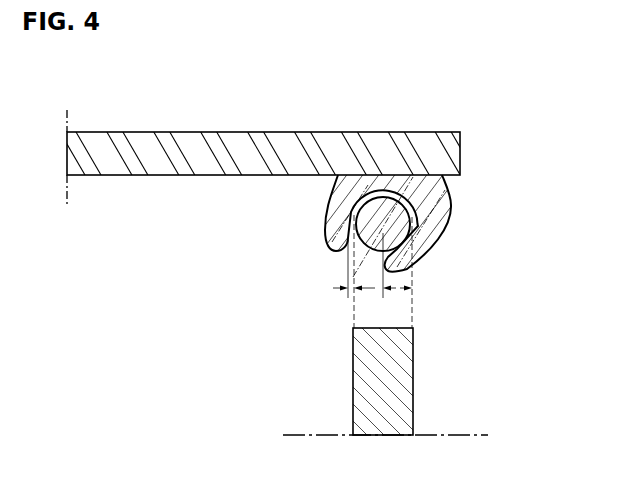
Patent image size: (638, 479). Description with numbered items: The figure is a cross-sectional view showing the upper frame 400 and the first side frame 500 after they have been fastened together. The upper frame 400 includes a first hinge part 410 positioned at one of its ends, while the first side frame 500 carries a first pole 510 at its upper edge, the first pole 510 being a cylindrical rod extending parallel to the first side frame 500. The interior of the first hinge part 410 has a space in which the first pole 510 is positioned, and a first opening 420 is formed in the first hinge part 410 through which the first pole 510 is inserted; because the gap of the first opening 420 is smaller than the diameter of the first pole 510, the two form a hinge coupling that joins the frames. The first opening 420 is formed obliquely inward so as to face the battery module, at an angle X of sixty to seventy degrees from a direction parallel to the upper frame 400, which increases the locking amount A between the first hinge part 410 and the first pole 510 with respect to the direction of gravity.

The upper frame 400 is at (223, 138).
The first hinge part 410 is at (452, 203).
The first opening 420 is at (331, 266).
The first pole 510 is at (418, 212).
The first side frame 500 is at (408, 402).
The locking amount A is at (356, 291).
The angle X is at (402, 183).